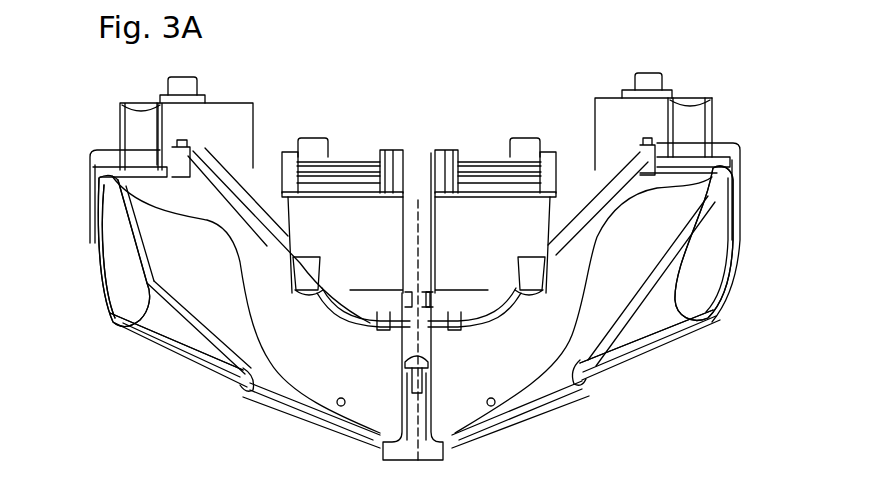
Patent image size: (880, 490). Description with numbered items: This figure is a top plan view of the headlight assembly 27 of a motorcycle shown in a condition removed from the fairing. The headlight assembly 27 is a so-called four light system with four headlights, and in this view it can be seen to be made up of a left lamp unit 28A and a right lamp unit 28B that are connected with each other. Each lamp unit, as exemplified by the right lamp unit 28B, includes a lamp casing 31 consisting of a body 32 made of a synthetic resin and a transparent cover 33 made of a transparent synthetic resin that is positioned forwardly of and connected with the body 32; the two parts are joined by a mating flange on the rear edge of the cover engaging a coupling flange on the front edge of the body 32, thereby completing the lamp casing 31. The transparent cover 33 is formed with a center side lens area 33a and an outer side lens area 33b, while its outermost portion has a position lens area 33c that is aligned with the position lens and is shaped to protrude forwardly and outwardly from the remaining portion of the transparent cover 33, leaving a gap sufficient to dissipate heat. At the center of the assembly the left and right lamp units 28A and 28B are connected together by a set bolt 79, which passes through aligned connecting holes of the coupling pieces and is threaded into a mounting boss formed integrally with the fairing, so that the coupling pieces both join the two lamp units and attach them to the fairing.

The headlight assembly 27 is at (500, 137).
The left lamp unit 28A is at (167, 366).
The right lamp unit 28B is at (667, 354).
The lamp casing 31 is at (792, 102).
The body 32 is at (750, 295).
The transparent cover 33 is at (718, 123).
The center side lens area 33a is at (315, 425).
The outer side lens area 33b is at (212, 378).
The position lens area 33c is at (118, 277).
The set bolt 79 is at (430, 357).